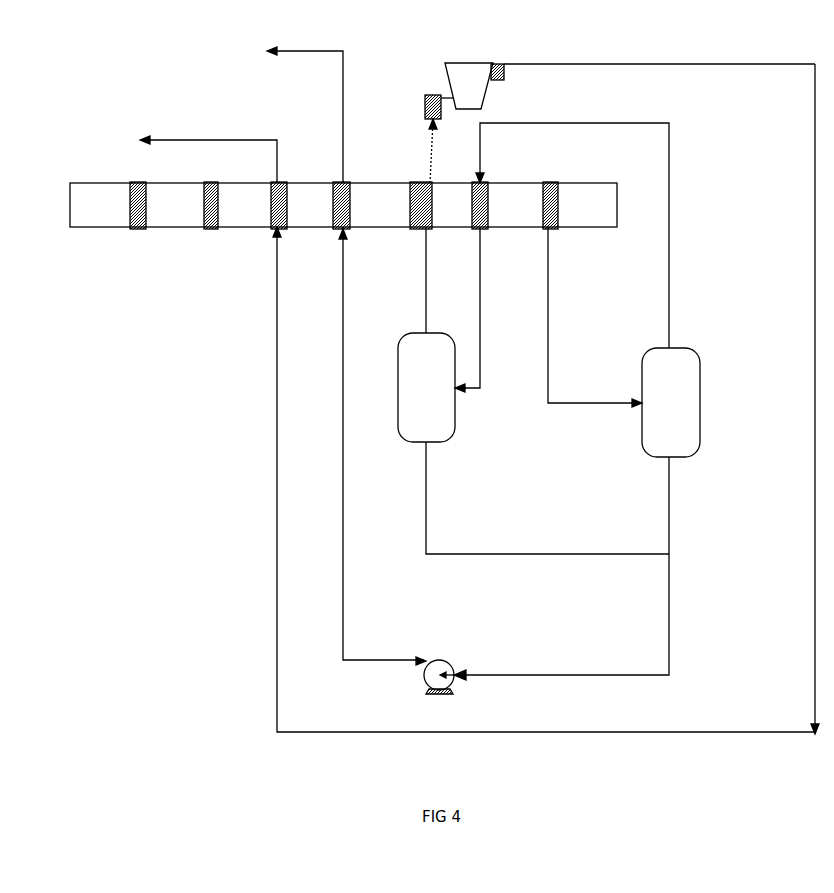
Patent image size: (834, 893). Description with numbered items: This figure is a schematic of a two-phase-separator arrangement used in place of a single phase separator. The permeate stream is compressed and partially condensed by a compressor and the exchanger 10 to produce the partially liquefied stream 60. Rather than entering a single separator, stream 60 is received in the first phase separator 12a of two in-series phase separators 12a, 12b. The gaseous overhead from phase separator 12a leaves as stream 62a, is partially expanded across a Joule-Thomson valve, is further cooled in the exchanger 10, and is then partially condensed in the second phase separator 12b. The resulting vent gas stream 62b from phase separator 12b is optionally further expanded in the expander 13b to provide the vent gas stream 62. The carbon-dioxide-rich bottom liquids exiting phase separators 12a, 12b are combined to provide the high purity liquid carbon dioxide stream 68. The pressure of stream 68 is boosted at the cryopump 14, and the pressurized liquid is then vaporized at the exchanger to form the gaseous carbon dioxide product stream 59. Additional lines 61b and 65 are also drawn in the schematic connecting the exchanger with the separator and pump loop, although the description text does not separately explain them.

The exchanger 10 is at (343, 205).
The first phase separator 12a is at (671, 402).
The second phase separator 12b is at (533, 443).
The expander 13b is at (620, 113).
The cryopump 14 is at (396, 460).
The gaseous CO2 product stream 59 is at (305, 105).
The partially liquefied stream 60 is at (595, 317).
The line to second vessel 61b is at (476, 325).
The vent gas stream 62 is at (208, 159).
The gaseous overhead stream 62a is at (598, 235).
The vent gas stream 62b is at (404, 280).
The recycle line 65 is at (530, 399).
The high purity liquid CO2 stream 68 is at (554, 568).